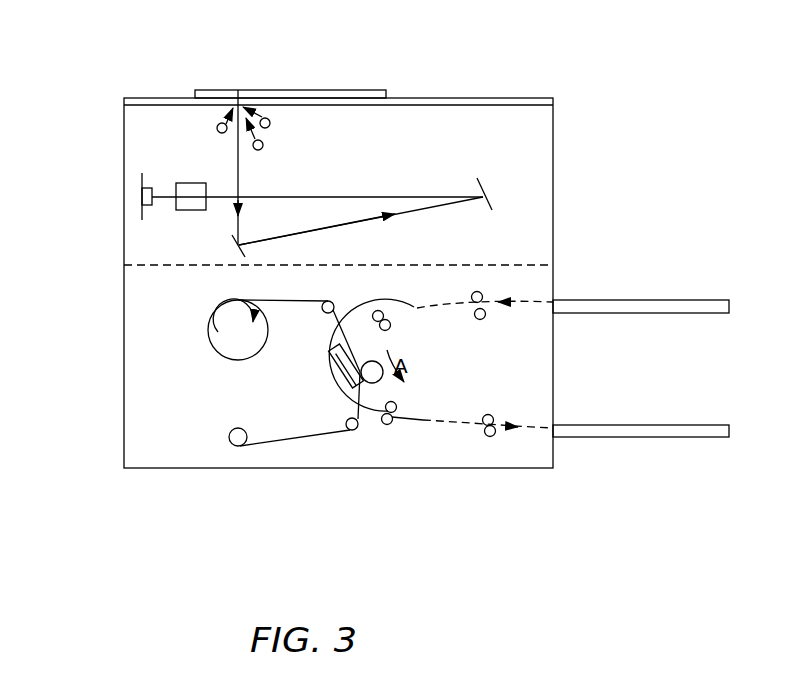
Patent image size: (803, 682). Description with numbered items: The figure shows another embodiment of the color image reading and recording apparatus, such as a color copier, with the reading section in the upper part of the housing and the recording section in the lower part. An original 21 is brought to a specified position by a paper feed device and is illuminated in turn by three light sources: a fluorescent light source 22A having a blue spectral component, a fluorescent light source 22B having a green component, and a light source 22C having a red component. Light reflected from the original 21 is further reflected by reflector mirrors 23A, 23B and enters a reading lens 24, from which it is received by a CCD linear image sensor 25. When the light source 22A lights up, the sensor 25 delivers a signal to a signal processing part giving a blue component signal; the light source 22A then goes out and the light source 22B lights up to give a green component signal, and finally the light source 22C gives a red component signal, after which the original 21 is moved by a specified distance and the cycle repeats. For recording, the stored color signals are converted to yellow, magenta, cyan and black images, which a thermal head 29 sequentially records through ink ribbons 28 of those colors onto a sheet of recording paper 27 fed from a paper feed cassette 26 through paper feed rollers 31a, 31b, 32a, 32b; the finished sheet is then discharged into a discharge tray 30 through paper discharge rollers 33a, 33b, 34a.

The original 21 is at (374, 90).
The fluorescent light source 22A is at (217, 127).
The fluorescent light source 22B is at (264, 145).
The light source 22C is at (265, 118).
The reflector mirror 23A is at (247, 247).
The reflector mirror 23B is at (490, 203).
The reading lens 24 is at (200, 211).
The CCD linear image sensor 25 is at (142, 205).
The paper feed cassette 26 is at (704, 300).
The recording paper 27 is at (422, 421).
The ink ribbons 28 is at (322, 303).
The thermal head 29 is at (333, 360).
The discharge tray 30 is at (688, 438).
The paper feed roller 31a is at (484, 282).
The paper feed roller 31b is at (478, 319).
The paper feed roller 32a is at (375, 311).
The paper feed roller 32b is at (390, 328).
The paper discharge roller 33a is at (396, 405).
The paper discharge roller 33b is at (412, 432).
The paper discharge roller 34a is at (491, 402).